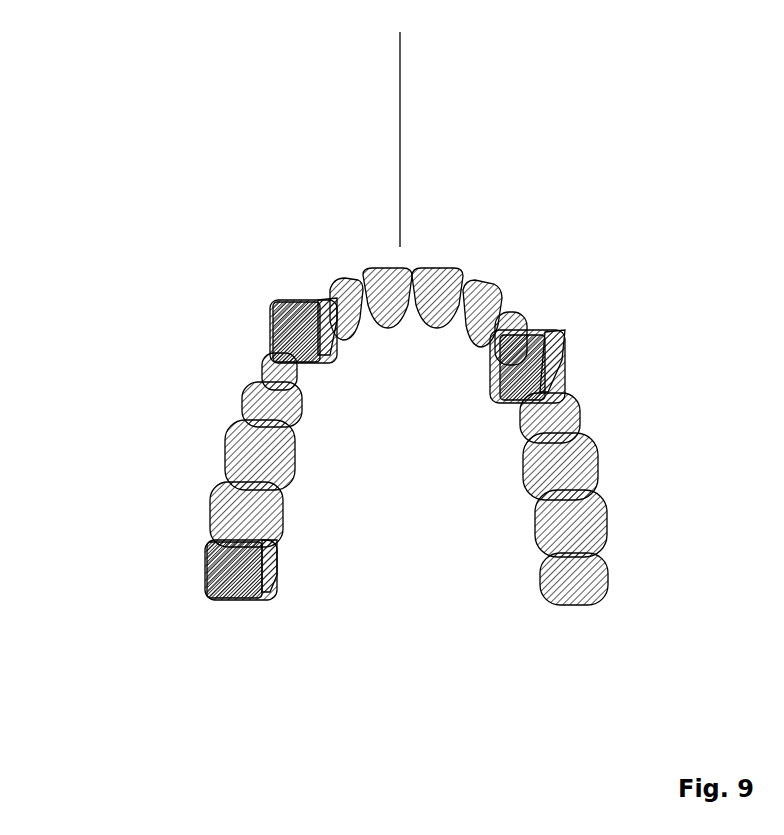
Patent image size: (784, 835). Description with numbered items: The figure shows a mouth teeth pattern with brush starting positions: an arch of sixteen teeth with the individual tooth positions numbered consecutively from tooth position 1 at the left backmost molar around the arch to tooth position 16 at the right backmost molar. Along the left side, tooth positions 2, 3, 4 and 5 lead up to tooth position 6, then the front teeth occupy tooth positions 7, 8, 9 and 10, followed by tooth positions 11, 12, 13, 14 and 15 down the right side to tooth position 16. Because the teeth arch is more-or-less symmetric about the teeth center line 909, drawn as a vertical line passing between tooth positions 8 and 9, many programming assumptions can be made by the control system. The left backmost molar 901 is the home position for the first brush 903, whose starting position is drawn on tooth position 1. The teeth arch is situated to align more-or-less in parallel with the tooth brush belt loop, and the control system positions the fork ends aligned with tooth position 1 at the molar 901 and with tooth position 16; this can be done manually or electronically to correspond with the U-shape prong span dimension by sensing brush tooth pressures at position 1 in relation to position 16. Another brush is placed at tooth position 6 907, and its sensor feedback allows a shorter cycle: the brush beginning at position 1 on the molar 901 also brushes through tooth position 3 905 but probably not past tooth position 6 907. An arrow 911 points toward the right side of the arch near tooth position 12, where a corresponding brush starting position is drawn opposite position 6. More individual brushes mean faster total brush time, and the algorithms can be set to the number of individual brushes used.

The left backmost molar 901 is at (150, 558).
The brush 1 903 is at (277, 557).
The tooth position 3 905 is at (252, 447).
The tooth position 6 907 is at (262, 282).
The teeth center line 909 is at (400, 107).
The right side of dental arch 911 is at (638, 312).
The tooth position 1 is at (237, 554).
The tooth position 2 is at (230, 514).
The tooth position 3 is at (174, 412).
The tooth position 4 is at (257, 403).
The tooth position 5 is at (262, 359).
The tooth position 6 is at (250, 291).
The tooth position 7 is at (339, 297).
The tooth position 8 is at (387, 279).
The tooth position 9 is at (437, 278).
The tooth position 10 is at (482, 301).
The tooth position 11 is at (521, 329).
The tooth position 12 is at (550, 366).
The tooth position 13 is at (571, 418).
The tooth position 14 is at (585, 466).
The tooth position 15 is at (597, 523).
The tooth position 16 is at (600, 579).